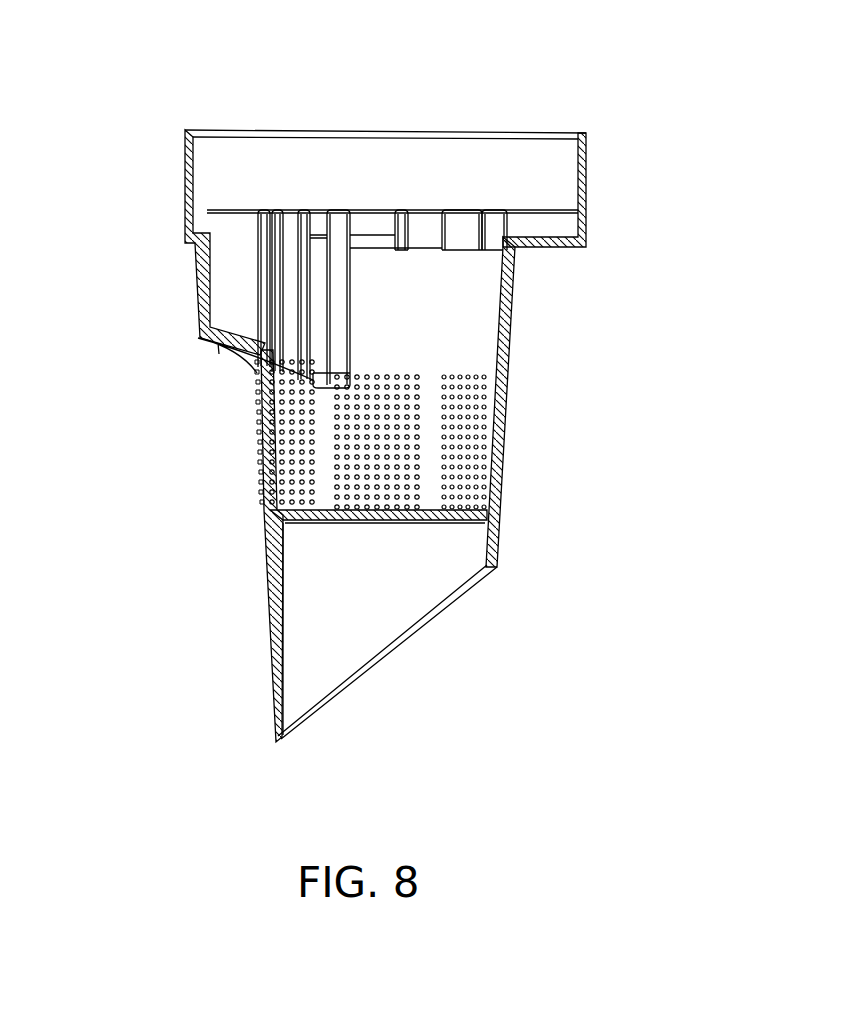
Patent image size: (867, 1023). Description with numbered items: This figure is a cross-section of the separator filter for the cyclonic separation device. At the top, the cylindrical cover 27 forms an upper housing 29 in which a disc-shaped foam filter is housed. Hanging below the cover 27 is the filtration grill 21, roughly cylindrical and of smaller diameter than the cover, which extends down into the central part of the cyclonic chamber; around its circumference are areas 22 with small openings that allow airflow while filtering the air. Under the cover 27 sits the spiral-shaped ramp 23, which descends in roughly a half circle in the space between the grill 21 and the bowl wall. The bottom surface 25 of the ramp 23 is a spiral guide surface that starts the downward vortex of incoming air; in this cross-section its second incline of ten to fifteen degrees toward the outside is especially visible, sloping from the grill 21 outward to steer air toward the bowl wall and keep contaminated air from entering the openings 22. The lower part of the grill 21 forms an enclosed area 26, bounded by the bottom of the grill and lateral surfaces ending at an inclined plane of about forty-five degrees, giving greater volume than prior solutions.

The upper housing 29 is at (430, 170).
The cylindrical cover 27 is at (587, 170).
The ramp 23 is at (197, 292).
The bottom surface of the ramp 25 is at (234, 349).
The filtration grill 21 is at (510, 328).
The areas with small openings 22 is at (440, 497).
The enclosed area 26 is at (383, 597).